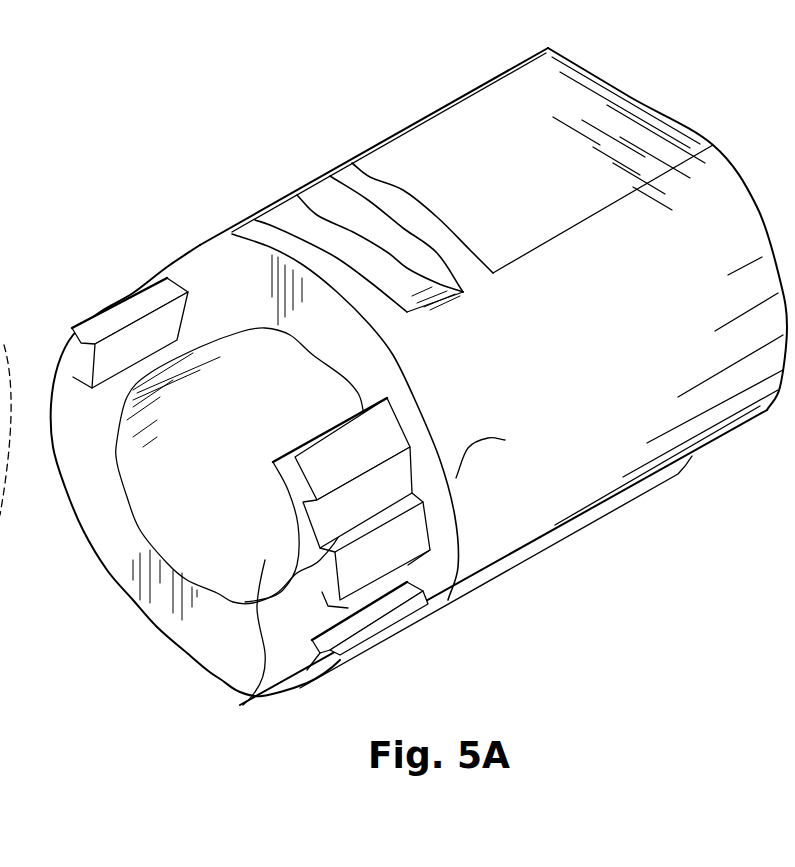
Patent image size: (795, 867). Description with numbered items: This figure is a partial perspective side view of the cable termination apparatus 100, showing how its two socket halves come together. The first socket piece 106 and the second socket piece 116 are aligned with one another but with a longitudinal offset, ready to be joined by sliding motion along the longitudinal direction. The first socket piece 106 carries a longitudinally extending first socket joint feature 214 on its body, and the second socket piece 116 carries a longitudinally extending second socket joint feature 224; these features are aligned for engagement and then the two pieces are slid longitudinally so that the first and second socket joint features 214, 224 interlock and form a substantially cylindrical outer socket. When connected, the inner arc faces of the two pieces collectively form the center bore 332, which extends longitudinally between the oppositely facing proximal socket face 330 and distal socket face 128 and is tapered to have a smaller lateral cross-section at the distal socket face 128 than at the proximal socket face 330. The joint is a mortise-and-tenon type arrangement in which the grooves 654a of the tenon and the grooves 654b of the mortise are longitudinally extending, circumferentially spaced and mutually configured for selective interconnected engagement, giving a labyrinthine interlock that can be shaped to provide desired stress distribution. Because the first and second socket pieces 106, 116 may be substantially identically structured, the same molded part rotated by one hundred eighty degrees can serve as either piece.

The cable termination apparatus 100 is at (722, 462).
The first socket piece 106 is at (80, 566).
The second socket piece 116 is at (388, 104).
The distal socket face 128 is at (738, 205).
The first socket joint feature 214 is at (100, 290).
The second socket joint feature 224 is at (192, 226).
The proximal socket face 330 is at (190, 623).
The center bore 332 is at (231, 484).
The grooves of the tenon 654a is at (312, 640).
The grooves of the mortise 654b is at (400, 418).